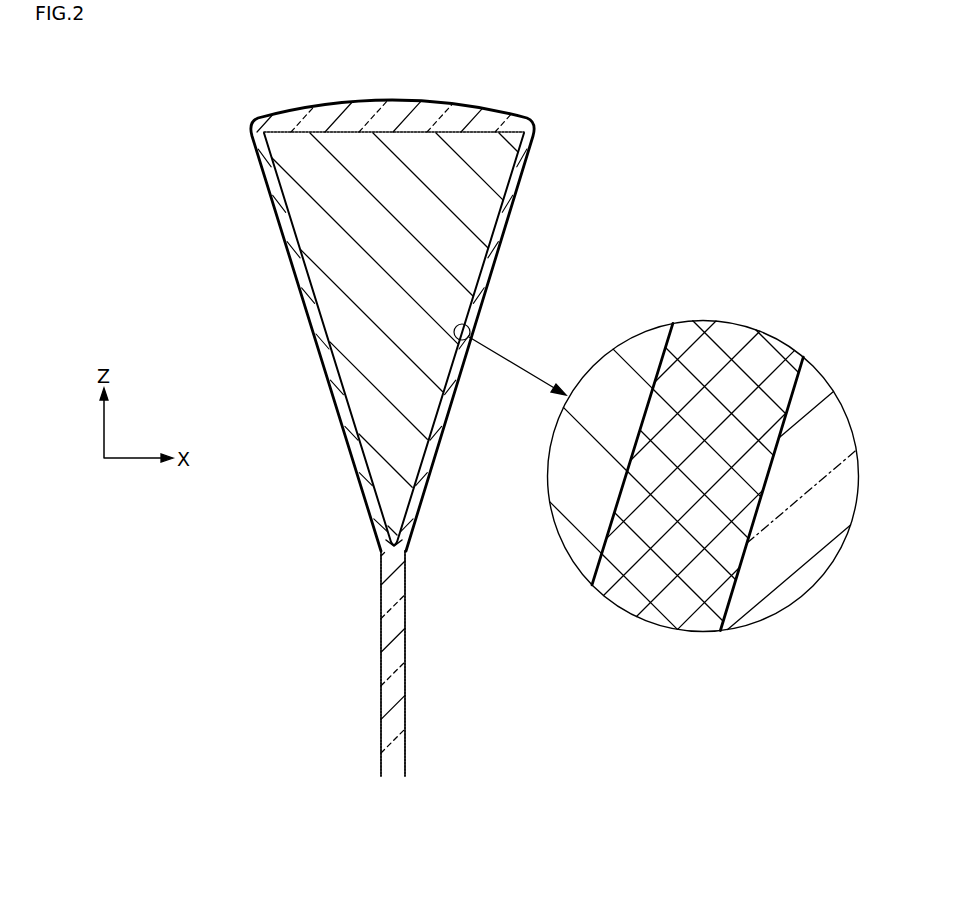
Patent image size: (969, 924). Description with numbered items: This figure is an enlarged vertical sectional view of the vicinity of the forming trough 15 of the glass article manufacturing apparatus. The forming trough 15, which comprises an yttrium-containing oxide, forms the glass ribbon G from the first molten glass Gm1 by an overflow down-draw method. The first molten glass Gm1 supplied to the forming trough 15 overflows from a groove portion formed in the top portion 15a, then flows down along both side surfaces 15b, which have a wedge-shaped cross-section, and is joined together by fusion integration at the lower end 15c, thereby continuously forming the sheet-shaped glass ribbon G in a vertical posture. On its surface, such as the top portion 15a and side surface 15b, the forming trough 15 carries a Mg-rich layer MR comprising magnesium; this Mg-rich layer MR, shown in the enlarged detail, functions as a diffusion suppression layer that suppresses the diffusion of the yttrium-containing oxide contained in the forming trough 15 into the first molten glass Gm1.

The forming trough 15 is at (302, 276).
The top portion 15a is at (447, 131).
The side surfaces 15b is at (495, 259).
The lower end 15c is at (395, 548).
The first molten glass Gm1 is at (363, 115).
The glass ribbon G is at (393, 652).
The Mg-rich layer MR is at (668, 610).